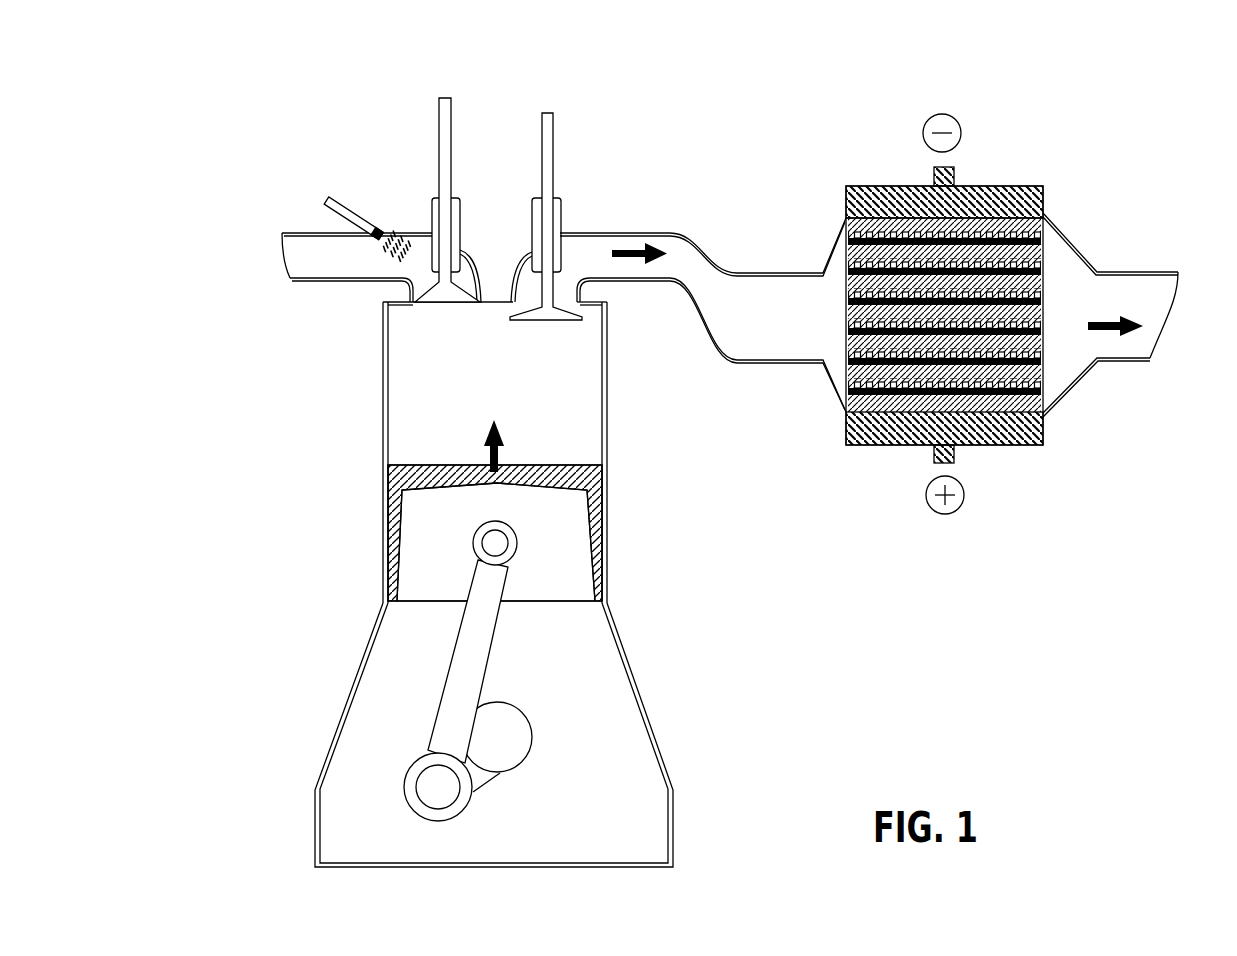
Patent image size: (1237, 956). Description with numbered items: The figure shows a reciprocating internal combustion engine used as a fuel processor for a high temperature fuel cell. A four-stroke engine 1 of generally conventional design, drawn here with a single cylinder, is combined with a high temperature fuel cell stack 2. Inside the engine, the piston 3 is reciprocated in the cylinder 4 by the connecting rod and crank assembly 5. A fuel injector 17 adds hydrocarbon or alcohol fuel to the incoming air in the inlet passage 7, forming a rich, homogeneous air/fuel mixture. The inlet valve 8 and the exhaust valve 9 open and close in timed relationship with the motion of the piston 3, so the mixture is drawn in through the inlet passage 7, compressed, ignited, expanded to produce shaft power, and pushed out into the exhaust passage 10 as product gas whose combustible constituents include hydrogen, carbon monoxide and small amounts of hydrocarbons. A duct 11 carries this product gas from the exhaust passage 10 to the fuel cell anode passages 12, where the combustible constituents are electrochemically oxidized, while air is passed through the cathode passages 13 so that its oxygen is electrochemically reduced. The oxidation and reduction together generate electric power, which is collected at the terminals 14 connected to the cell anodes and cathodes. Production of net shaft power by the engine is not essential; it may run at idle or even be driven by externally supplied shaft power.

The four-stroke engine 1 is at (364, 469).
The high temperature fuel cell stack 2 is at (1079, 197).
The piston 3 is at (401, 543).
The cylinder 4 is at (374, 413).
The connecting rod and crank assembly 5 is at (449, 731).
The inlet passage 7 is at (311, 242).
The inlet valve 8 is at (437, 117).
The exhaust valve 9 is at (560, 109).
The exhaust passage 10 is at (596, 226).
The duct 11 is at (720, 258).
The fuel cell anode passages 12 is at (990, 382).
The cathode passages 13 is at (1025, 424).
The terminals 14 is at (962, 163).
The fuel injector 17 is at (344, 208).